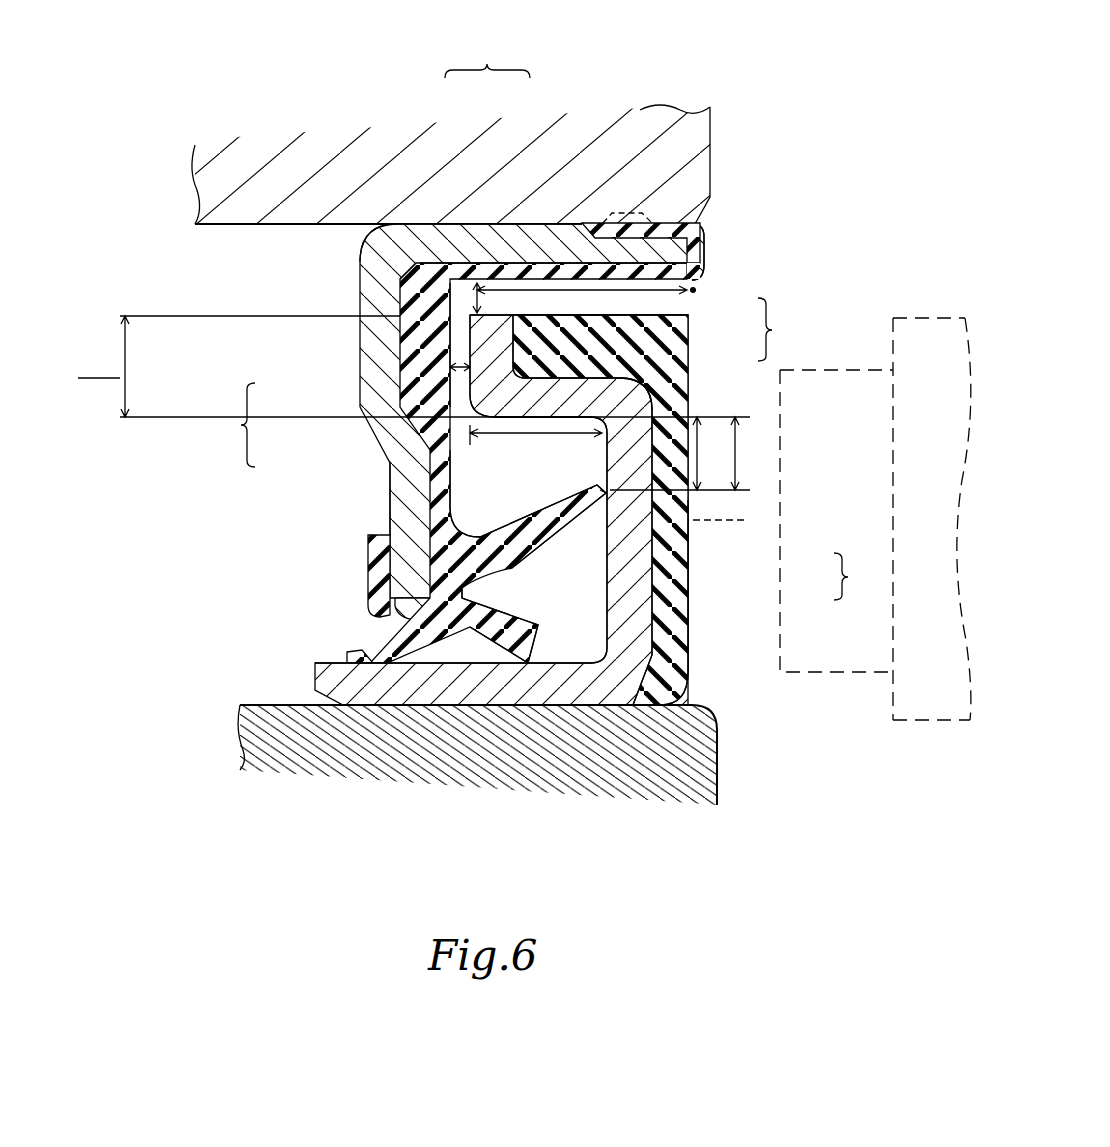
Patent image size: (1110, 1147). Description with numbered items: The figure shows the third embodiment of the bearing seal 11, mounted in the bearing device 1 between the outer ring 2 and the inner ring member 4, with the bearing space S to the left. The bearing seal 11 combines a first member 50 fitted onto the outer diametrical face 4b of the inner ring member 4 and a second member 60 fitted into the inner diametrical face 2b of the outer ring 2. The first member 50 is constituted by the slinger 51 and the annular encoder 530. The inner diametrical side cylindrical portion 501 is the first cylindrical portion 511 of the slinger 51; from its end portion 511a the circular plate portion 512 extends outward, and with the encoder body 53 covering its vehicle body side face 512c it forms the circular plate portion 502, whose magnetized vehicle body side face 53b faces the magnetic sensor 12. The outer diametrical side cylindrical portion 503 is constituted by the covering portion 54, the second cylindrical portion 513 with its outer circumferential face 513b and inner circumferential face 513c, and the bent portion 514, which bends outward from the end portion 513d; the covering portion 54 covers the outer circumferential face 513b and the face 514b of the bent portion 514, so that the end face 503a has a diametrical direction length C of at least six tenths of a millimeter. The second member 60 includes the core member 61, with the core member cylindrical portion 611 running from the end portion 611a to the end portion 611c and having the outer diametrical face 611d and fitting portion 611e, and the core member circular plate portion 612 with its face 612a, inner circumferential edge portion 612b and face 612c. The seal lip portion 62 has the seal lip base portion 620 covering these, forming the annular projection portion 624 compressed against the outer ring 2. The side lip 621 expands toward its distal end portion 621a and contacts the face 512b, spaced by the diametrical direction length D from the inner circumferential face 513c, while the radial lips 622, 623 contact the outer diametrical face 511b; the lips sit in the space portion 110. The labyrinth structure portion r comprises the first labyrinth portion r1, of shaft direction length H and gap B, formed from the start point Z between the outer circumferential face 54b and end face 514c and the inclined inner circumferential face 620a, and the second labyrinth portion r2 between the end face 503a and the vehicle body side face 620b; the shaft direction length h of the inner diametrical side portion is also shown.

The bearing device 1 is at (767, 106).
The outer ring 2 is at (547, 173).
The inner diametrical face 2b is at (247, 222).
The inner ring member 4 is at (690, 800).
The outer diametrical face 4b is at (340, 703).
The bearing seal 11 is at (863, 379).
The magnetic sensor 12 is at (900, 722).
The first member 50 is at (746, 501).
The slinger 51 is at (630, 680).
The inner diametrical side cylindrical portion 501 is at (728, 650).
The circular plate portion 502 is at (862, 576).
The outer diametrical side cylindrical portion 503 is at (786, 329).
The end face 503a is at (448, 372).
The first cylindrical portion 511 is at (607, 627).
The end portion 511a is at (662, 690).
The outer diametrical face 511b is at (578, 667).
The circular plate portion 512 is at (665, 573).
The face 512b is at (607, 587).
The vehicle body side face 512c is at (655, 548).
The second cylindrical portion 513 is at (588, 378).
The outer circumferential face 513b is at (633, 382).
The inner circumferential face 513c is at (530, 400).
The end portion 513d is at (505, 395).
The bent portion 514 is at (597, 336).
The face 514b is at (400, 360).
The end face 514c is at (400, 348).
The encoder body 53 is at (630, 588).
The vehicle body side face 53b is at (633, 612).
The covering portion 54 is at (560, 332).
The outer circumferential face 54b is at (590, 313).
The annular encoder 530 is at (704, 399).
The second member 60 is at (231, 425).
The core member 61 is at (348, 401).
The seal lip portion 62 is at (392, 457).
The space portion 110 is at (485, 512).
The core member cylindrical portion 611 is at (383, 253).
The end portion 611a is at (382, 253).
The end portion 611c is at (700, 263).
The outer diametrical face 611d is at (673, 237).
The fitting portion 611e is at (423, 240).
The core member circular plate portion 612 is at (383, 312).
The face 612a is at (388, 510).
The inner circumferential edge portion 612b is at (387, 612).
The face 612c is at (430, 550).
The seal lip base portion 620 is at (410, 297).
The inner circumferential face 620a is at (565, 277).
The vehicle body side face 620b is at (447, 402).
The side lip 621 is at (563, 530).
The distal end portion 621a is at (670, 537).
The radial lip 622 is at (485, 617).
The radial lip 623 is at (347, 652).
The annular projection portion 624 is at (632, 213).
The bearing space S is at (210, 495).
The gap A is at (460, 390).
The gap B is at (469, 299).
The diametrical direction length C is at (404, 366).
The diametrical direction length D is at (688, 453).
The shaft direction length H is at (582, 300).
The shaft direction length h is at (536, 443).
The labyrinth structure portion r is at (487, 60).
The first labyrinth portion r1 is at (492, 290).
The second labyrinth portion r2 is at (450, 290).
The start point Z is at (693, 290).